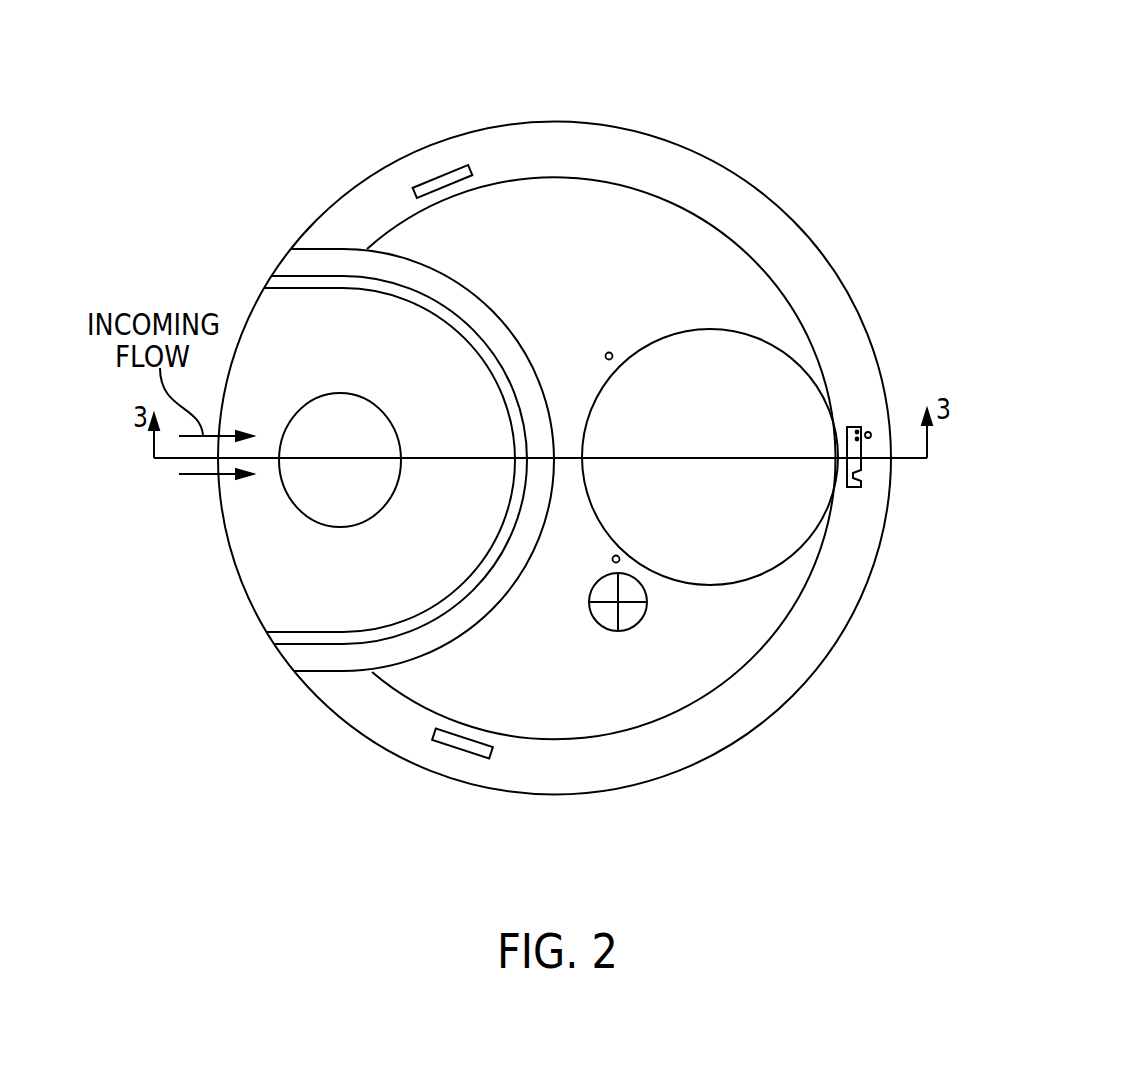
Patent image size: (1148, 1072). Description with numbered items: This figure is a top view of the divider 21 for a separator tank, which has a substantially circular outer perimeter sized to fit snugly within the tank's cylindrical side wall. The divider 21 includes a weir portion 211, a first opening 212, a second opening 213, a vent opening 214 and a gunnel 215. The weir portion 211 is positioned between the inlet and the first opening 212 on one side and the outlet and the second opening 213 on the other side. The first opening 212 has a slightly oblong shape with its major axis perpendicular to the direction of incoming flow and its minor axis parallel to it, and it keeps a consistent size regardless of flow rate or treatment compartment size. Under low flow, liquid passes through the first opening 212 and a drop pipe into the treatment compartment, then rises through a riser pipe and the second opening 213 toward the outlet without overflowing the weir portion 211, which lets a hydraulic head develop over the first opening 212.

The divider 21 is at (748, 112).
The weir portion 211 is at (397, 263).
The first opening 212 is at (335, 507).
The second opening 213 is at (788, 398).
The vent opening 214 is at (622, 633).
The gunnel 215 is at (518, 780).